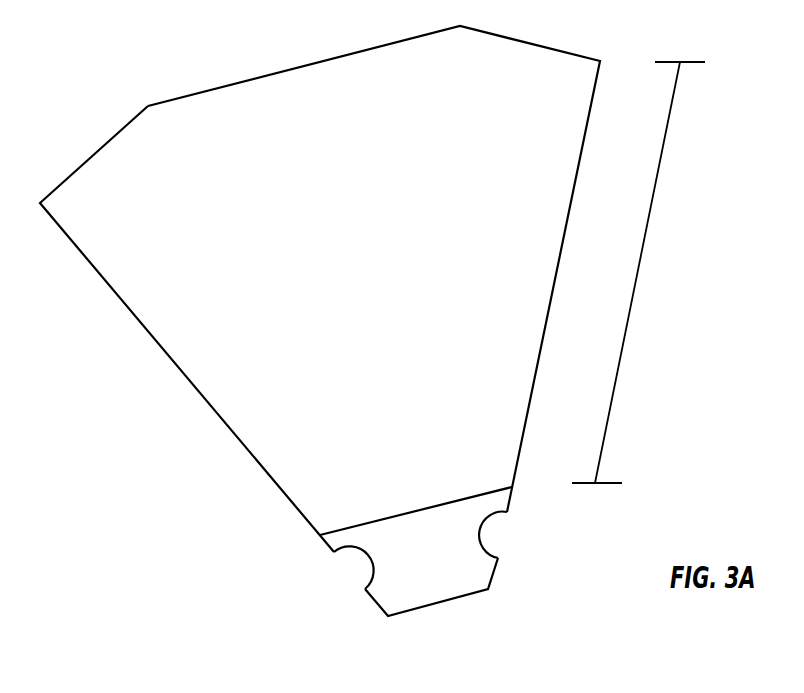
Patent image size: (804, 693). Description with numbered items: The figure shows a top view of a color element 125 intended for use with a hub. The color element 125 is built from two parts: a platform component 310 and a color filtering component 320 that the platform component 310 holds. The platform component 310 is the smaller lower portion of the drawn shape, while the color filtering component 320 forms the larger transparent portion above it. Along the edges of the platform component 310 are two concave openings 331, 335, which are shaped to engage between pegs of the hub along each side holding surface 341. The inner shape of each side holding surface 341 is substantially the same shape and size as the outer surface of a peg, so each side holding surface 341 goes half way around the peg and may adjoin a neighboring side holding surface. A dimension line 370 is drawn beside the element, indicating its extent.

The color element 125 is at (320, 346).
The color filtering component 320 is at (341, 337).
The platform component 310 is at (421, 589).
The concave opening 331 is at (523, 534).
The concave opening 335 is at (352, 577).
The side holding surface 341 is at (401, 612).
The blade length dimension 370 is at (649, 272).